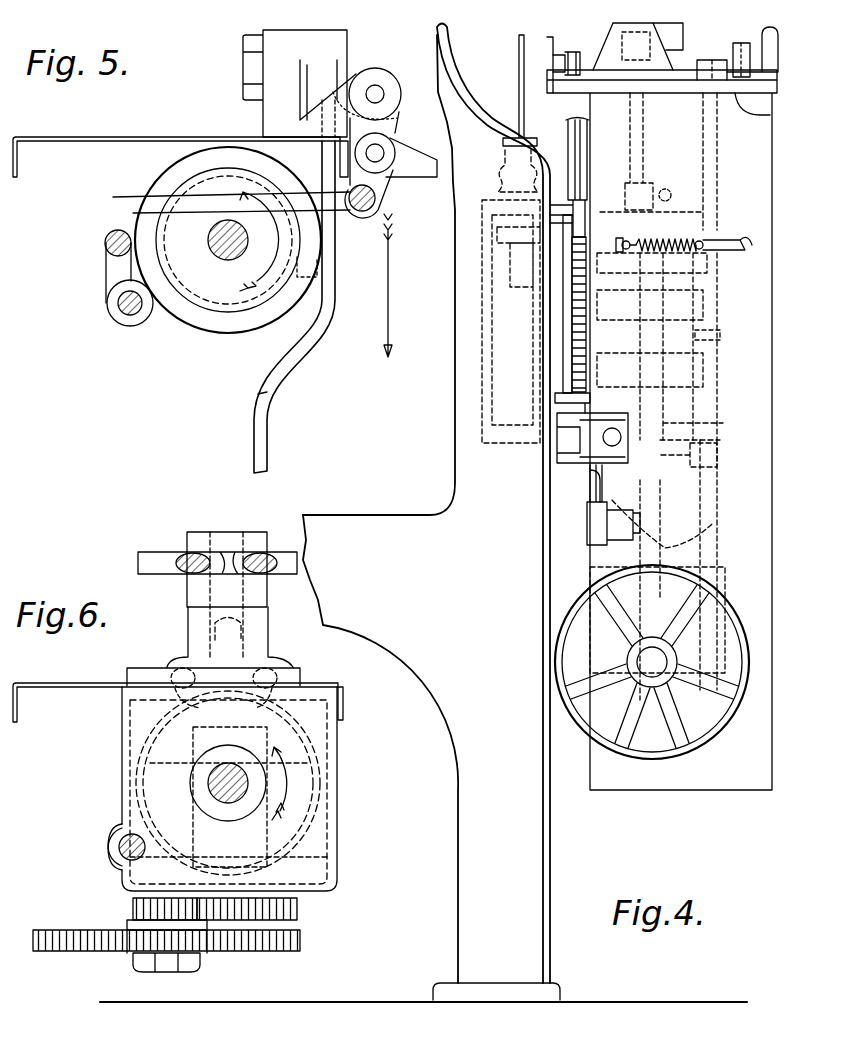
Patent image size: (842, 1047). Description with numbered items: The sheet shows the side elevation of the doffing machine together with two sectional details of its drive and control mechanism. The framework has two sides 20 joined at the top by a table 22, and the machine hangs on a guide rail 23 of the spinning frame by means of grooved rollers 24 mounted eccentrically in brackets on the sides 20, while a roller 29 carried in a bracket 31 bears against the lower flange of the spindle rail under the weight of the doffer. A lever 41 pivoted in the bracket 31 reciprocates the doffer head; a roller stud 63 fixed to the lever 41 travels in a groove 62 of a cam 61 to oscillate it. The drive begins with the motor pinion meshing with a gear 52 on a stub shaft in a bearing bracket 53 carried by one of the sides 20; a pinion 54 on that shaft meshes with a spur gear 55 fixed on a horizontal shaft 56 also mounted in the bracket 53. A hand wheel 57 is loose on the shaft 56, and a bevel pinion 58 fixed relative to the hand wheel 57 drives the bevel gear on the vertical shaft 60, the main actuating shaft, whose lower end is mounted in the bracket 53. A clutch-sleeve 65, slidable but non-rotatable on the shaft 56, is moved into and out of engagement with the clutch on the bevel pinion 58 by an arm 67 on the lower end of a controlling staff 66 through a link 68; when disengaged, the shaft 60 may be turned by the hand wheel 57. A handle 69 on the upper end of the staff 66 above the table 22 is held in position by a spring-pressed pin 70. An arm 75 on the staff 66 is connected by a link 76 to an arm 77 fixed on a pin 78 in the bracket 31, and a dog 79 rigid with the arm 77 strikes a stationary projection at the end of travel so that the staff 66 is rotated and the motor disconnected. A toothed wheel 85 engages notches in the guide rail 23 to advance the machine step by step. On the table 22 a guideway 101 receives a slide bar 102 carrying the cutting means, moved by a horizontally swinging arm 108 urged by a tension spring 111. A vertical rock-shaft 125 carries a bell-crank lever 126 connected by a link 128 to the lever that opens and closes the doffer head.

In FIG. 5, the sides 20 is at (63, 140).
In FIG. 6, the sides 20 is at (75, 686).
In FIG. 4, the sides 20 is at (745, 393).
In FIG. 4, the table 22 is at (768, 110).
In FIG. 4, the guide rail 23 is at (570, 232).
In FIG. 4, the grooved rollers 24 is at (578, 146).
In FIG. 5, the roller 29 is at (390, 76).
In FIG. 4, the roller 29 is at (565, 438).
In FIG. 5, the bracket 31 is at (352, 80).
In FIG. 4, the bracket 31 is at (575, 505).
In FIG. 5, the lever 41 is at (258, 394).
In FIG. 4, the lever 41 is at (590, 505).
In FIG. 6, the gear 52 is at (245, 948).
In FIG. 6, the bearing bracket 53 is at (305, 864).
In FIG. 6, the pinion 54 is at (133, 907).
In FIG. 6, the spur gear 55 is at (297, 913).
In FIG. 4, the horizontal shaft 56 is at (655, 672).
In FIG. 6, the hand wheel 57 is at (224, 562).
In FIG. 4, the hand wheel 57 is at (698, 728).
In FIG. 6, the bevel pinion 58 is at (263, 690).
In FIG. 5, the vertical shaft 60 is at (225, 243).
In FIG. 6, the vertical shaft 60 is at (207, 780).
In FIG. 4, the vertical shaft 60 is at (705, 427).
In FIG. 5, the cam 61 is at (197, 320).
In FIG. 4, the groove 62 is at (705, 528).
In FIG. 5, the roller stud 63 is at (320, 290).
In FIG. 6, the clutch-sleeve 65 is at (288, 772).
In FIG. 5, the controlling staff 66 is at (121, 309).
In FIG. 6, the controlling staff 66 is at (118, 849).
In FIG. 4, the controlling staff 66 is at (674, 346).
In FIG. 6, the arm 67 is at (228, 783).
In FIG. 6, the link 68 is at (271, 826).
In FIG. 4, the handle 69 is at (778, 50).
In FIG. 4, the spring-pressed pin 70 is at (743, 47).
In FIG. 5, the arm 75 is at (108, 272).
In FIG. 5, the link 76 is at (190, 196).
In FIG. 5, the arm 77 is at (380, 202).
In FIG. 5, the pin 78 is at (378, 150).
In FIG. 5, the dog 79 is at (405, 156).
In FIG. 4, the dog 79 is at (557, 398).
In FIG. 4, the toothed wheel 85 is at (585, 340).
In FIG. 4, the guideway 101 is at (518, 40).
In FIG. 4, the slide bar 102 is at (560, 62).
In FIG. 4, the horizontally swinging arm 108 is at (682, 70).
In FIG. 4, the tension spring 111 is at (740, 250).
In FIG. 4, the vertical rock-shaft 125 is at (645, 130).
In FIG. 4, the bell-crank lever 126 is at (655, 170).
In FIG. 4, the link 128 is at (677, 183).